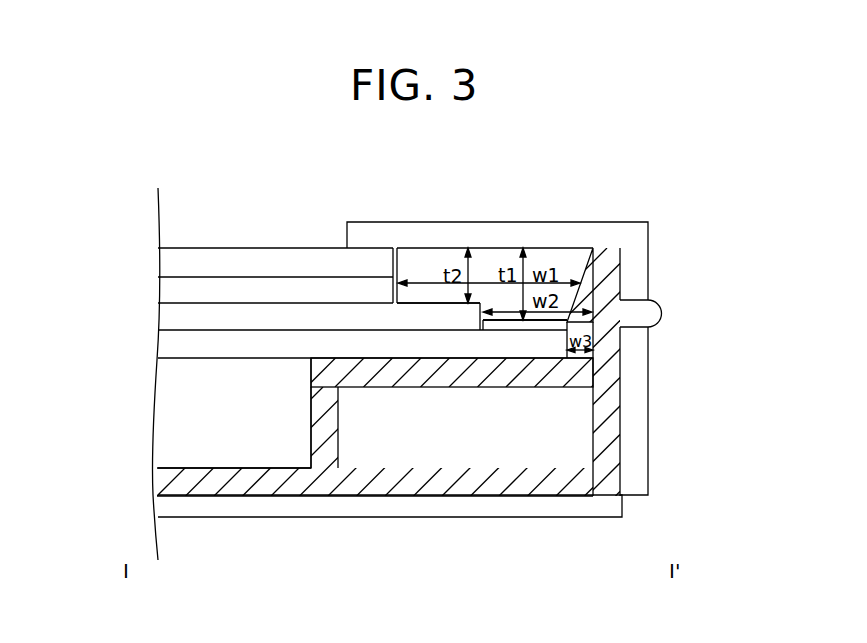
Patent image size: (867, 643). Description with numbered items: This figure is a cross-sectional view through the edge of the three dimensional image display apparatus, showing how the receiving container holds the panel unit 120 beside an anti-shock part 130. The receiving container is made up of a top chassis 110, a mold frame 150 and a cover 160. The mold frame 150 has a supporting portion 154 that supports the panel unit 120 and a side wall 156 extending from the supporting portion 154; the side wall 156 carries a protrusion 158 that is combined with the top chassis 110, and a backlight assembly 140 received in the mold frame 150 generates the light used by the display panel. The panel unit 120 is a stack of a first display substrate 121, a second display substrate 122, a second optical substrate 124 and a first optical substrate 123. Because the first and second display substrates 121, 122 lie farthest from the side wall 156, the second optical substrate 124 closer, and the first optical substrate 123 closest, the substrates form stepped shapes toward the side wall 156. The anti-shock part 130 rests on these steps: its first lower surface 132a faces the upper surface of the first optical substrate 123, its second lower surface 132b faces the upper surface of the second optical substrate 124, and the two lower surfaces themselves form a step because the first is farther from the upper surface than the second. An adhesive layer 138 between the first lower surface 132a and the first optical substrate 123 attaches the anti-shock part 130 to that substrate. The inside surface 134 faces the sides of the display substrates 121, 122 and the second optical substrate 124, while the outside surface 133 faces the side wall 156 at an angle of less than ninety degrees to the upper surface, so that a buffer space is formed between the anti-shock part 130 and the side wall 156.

The top chassis 110 is at (638, 240).
The panel unit 120 is at (310, 303).
The first display substrate 121 is at (167, 291).
The second display substrate 122 is at (167, 262).
The first optical substrate 123 is at (336, 344).
The second optical substrate 124 is at (167, 319).
The anti-shock part 130 is at (553, 262).
The first lower surface 132a is at (492, 320).
The second lower surface 132b is at (438, 303).
The outside surface 133 is at (598, 280).
The inside surface 134 is at (395, 262).
The adhesive layer 138 is at (567, 323).
The backlight assembly 140 is at (168, 416).
The mold frame 150 is at (410, 372).
The supporting portion 154 is at (555, 373).
The side wall 156 is at (612, 347).
The protrusion 158 is at (661, 313).
The cover 160 is at (458, 518).